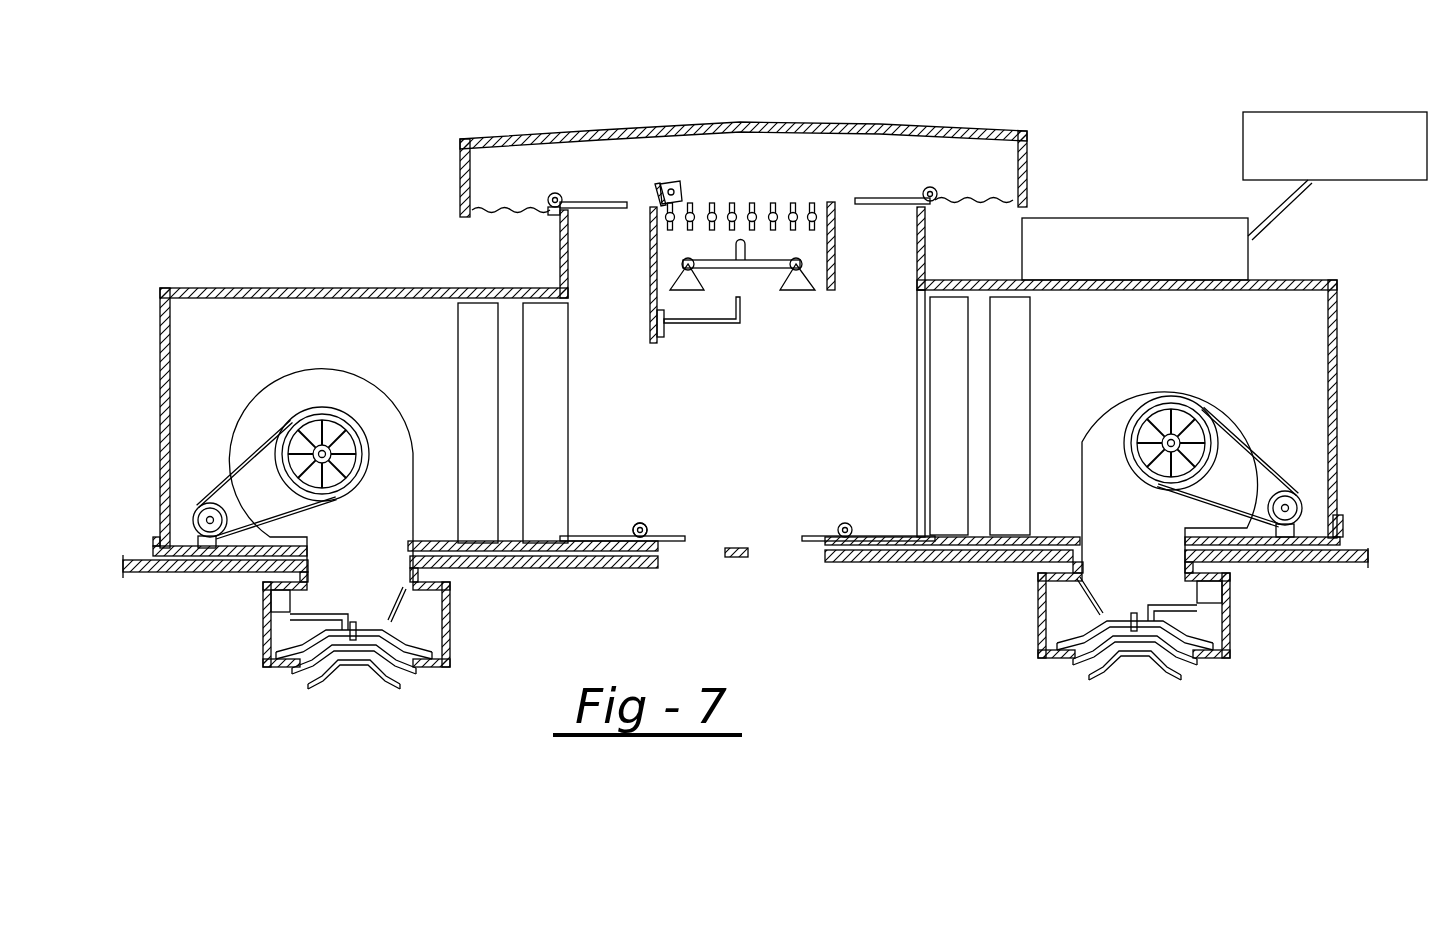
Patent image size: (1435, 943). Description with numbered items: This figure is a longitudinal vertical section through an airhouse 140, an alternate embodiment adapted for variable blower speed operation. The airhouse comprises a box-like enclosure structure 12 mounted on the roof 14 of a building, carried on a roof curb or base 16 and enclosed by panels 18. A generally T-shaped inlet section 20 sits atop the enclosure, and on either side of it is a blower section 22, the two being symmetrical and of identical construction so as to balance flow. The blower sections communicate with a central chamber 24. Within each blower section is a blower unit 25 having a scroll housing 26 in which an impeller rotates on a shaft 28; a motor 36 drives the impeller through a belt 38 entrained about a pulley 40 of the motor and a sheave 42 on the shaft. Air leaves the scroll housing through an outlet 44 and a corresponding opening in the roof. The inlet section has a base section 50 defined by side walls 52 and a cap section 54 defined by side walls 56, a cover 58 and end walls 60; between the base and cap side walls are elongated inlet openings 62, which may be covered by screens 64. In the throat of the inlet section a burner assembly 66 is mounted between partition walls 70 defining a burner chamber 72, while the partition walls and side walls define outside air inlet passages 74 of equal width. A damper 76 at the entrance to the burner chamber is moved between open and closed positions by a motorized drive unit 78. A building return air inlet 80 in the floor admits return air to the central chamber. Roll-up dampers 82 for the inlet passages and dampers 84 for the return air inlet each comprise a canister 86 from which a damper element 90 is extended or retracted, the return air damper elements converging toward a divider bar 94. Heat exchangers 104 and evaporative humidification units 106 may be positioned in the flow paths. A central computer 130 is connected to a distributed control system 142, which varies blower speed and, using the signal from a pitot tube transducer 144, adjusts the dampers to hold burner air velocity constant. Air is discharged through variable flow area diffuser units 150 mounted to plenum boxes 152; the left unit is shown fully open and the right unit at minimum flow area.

The enclosure structure 12 is at (1288, 277).
The roof 14 is at (900, 572).
The roof curb or base 16 is at (1345, 530).
The panels 18 is at (1350, 302).
The inlet section 20 is at (728, 137).
The blower section 22 is at (237, 336).
The central chamber 24 is at (777, 418).
The blower unit 25 is at (744, 460).
The scroll housing 26 is at (372, 405).
The shaft 28 is at (345, 470).
The motor 36 is at (205, 505).
The belt 38 is at (248, 502).
The pulley 40 is at (212, 546).
The sheave 42 is at (333, 500).
The outlet 44 is at (390, 586).
The base section 50 is at (553, 216).
The side walls 52 is at (918, 296).
The cap section 54 is at (1004, 127).
The side walls 56 is at (457, 150).
The cover 58 is at (556, 132).
The end walls 60 is at (1015, 182).
The inlet openings 62 is at (949, 207).
The screens 64 is at (468, 212).
The burner assembly 66 is at (776, 293).
The partition walls 70 is at (831, 292).
The burner chamber 72 is at (800, 262).
The outside air inlet passages 74 is at (625, 262).
The damper 76 is at (757, 203).
The motorized drive unit 78 is at (682, 185).
The building return air inlet 80 is at (775, 566).
The dampers 82 is at (563, 191).
The dampers 84 is at (651, 522).
The canister 86 is at (551, 192).
The damper element 90 is at (672, 537).
The divider bar 94 is at (736, 547).
The thermal heat exchangers 104 is at (558, 415).
The evaporative humidification units 106 is at (457, 415).
The central computer 130 is at (1318, 112).
The airhouse 140 is at (796, 65).
The distributed control system 142 is at (1113, 218).
The pitot tube transducer 144 is at (712, 325).
The variable flow area diffuser units 150 is at (741, 631).
The plenum boxes 152 is at (452, 635).